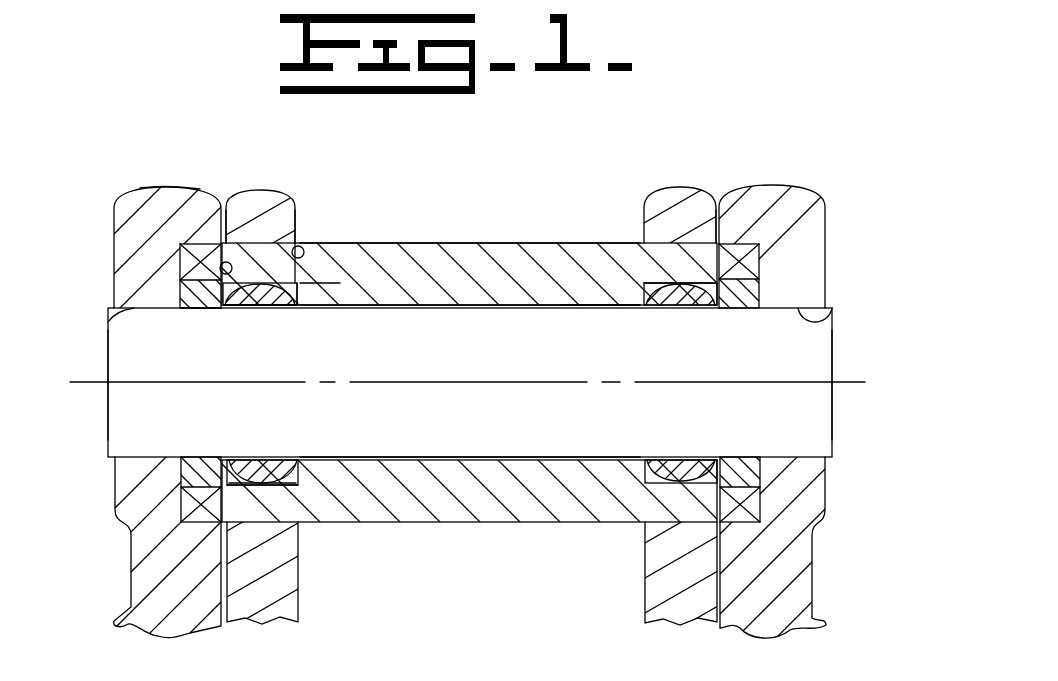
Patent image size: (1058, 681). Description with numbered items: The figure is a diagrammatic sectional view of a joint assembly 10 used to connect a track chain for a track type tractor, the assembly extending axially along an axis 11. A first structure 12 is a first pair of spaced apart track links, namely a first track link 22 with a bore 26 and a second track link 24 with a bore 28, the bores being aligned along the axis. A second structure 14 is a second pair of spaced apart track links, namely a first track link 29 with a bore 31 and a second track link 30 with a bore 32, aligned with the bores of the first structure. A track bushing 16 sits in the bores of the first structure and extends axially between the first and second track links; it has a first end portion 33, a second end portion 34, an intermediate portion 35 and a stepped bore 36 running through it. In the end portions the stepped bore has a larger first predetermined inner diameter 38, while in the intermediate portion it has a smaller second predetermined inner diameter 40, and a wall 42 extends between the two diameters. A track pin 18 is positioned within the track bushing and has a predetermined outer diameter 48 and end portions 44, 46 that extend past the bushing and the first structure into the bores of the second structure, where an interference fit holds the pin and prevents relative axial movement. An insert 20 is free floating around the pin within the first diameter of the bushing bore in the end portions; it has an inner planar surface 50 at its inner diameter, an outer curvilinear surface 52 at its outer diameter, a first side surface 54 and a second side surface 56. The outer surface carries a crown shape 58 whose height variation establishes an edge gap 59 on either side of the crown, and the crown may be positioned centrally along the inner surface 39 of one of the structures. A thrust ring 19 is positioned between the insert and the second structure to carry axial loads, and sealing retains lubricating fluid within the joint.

The joint assembly 10 is at (698, 103).
The axis 11 is at (857, 382).
The first structure 12 is at (301, 180).
The second structure 14 is at (137, 180).
The track bushing 16 is at (511, 233).
The track pin 18 is at (112, 428).
The thrust ring 19 is at (185, 308).
The insert 20 is at (278, 455).
The first track link 22 is at (260, 193).
The second track link 24 is at (660, 195).
The bore 26 is at (298, 248).
The bore 28 is at (667, 253).
The first track link 29 is at (183, 187).
The second track link 30 is at (797, 187).
The bore 31 is at (108, 325).
The bore 32 is at (833, 308).
The first end portion 33 is at (247, 245).
The second end portion 34 is at (703, 197).
The intermediate portion 35 is at (470, 252).
The stepped bore 36 is at (455, 312).
The first predetermined inner diameter 38 is at (265, 492).
The inner surface 39 is at (298, 275).
The second predetermined inner diameter 40 is at (585, 308).
The wall 42 is at (287, 308).
The end portion 44 is at (120, 365).
The end portion 46 is at (818, 430).
The outer diameter 48 is at (463, 470).
The inner planar surface 50 is at (247, 308).
The outer curvilinear surface 52 is at (330, 275).
The first side surface 54 is at (217, 308).
The second side surface 56 is at (303, 308).
The crown shape 58 is at (265, 492).
The edge gap 59 is at (305, 255).